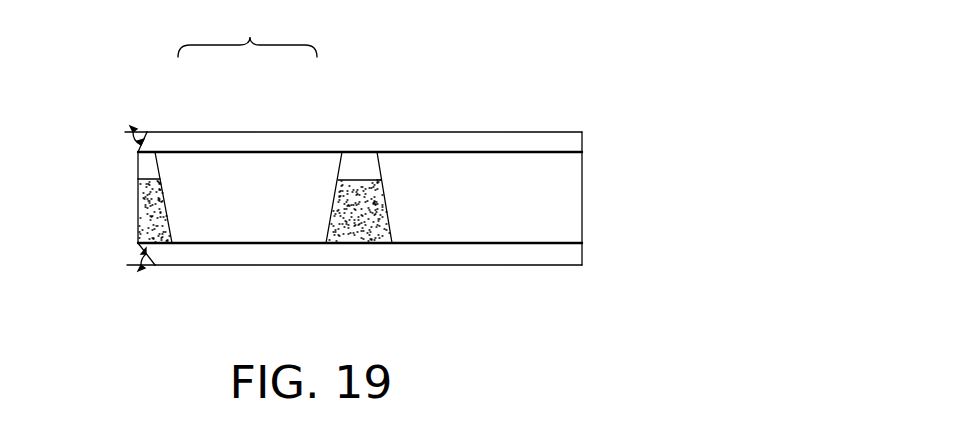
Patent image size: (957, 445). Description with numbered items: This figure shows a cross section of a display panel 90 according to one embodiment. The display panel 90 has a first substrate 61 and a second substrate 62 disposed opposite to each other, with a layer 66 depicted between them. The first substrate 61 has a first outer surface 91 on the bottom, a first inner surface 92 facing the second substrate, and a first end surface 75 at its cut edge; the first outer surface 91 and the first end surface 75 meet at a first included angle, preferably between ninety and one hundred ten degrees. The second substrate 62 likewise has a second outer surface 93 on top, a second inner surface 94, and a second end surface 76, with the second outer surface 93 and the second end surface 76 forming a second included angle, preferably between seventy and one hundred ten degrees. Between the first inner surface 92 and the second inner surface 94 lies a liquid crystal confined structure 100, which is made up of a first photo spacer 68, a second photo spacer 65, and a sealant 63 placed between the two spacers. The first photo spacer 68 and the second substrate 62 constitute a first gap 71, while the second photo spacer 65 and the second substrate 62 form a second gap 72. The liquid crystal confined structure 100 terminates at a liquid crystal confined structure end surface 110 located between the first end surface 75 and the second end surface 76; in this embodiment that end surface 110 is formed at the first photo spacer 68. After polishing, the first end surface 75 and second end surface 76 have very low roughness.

The display panel 90 is at (578, 74).
The second substrate 62 is at (568, 148).
The intermediate layer 66 is at (568, 201).
The first substrate 61 is at (568, 258).
The second inner surface 94 is at (444, 168).
The second outer surface 93 is at (515, 132).
The first inner surface 92 is at (443, 243).
The first outer surface 91 is at (513, 265).
The liquid crystal confined structure 100 is at (250, 37).
The first photo spacer 68 is at (165, 190).
The sealant 63 is at (245, 170).
The second photo spacer 65 is at (347, 210).
The second gap 72 is at (362, 170).
The first gap 71 is at (147, 170).
The liquid crystal confined structure end surface 110 is at (140, 208).
The second end surface 76 is at (158, 131).
The first end surface 75 is at (153, 265).